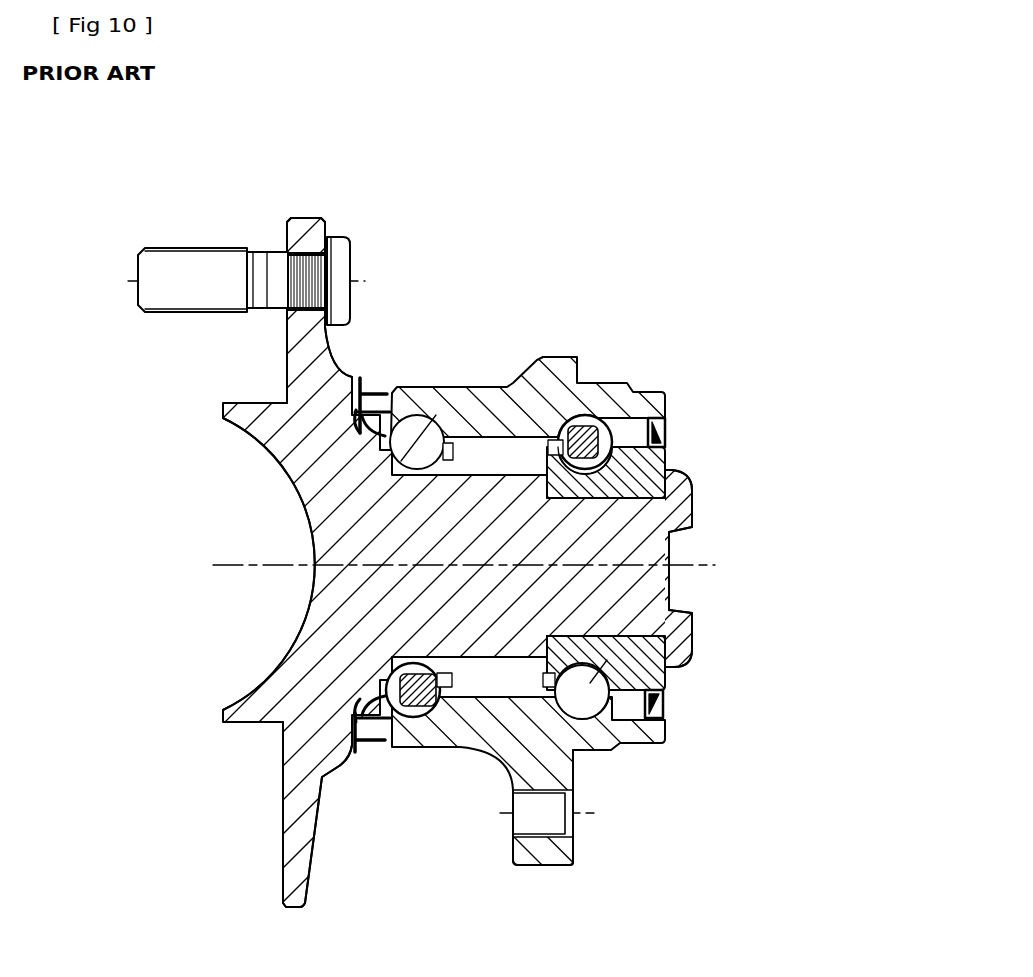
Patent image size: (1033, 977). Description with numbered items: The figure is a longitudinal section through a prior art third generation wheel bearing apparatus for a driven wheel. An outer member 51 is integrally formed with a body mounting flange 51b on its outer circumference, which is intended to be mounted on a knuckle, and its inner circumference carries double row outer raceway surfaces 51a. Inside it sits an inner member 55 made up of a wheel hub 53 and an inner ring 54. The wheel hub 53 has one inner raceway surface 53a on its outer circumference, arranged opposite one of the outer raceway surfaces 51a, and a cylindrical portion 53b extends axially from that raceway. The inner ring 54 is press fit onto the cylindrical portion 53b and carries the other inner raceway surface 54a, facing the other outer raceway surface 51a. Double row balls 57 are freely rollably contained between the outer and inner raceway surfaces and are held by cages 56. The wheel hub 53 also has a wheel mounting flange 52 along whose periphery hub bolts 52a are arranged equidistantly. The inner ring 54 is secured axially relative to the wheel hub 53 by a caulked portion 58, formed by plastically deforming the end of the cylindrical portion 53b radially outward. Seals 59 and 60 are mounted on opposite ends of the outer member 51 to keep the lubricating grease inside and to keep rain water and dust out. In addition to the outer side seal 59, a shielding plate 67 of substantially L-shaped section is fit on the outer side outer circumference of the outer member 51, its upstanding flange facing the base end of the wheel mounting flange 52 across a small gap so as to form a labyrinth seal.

The outer member 51 is at (507, 385).
The double row outer raceway surfaces 51a is at (413, 422).
The body mounting flange 51b is at (545, 855).
The wheel mounting flange 52 is at (305, 230).
The hub bolts 52a is at (193, 263).
The wheel hub 53 is at (307, 468).
The inner raceway surface 53a is at (355, 423).
The cylindrical portion 53b is at (597, 447).
The inner ring 54 is at (650, 462).
The inner raceway surface 54a is at (662, 425).
The inner member 55 is at (282, 519).
The cages 56 is at (543, 677).
The double row balls 57 is at (560, 718).
The caulked portion 58 is at (672, 490).
The outer side seal 59 is at (352, 740).
The inner side seal 60 is at (663, 705).
The shielding plate 67 is at (347, 752).